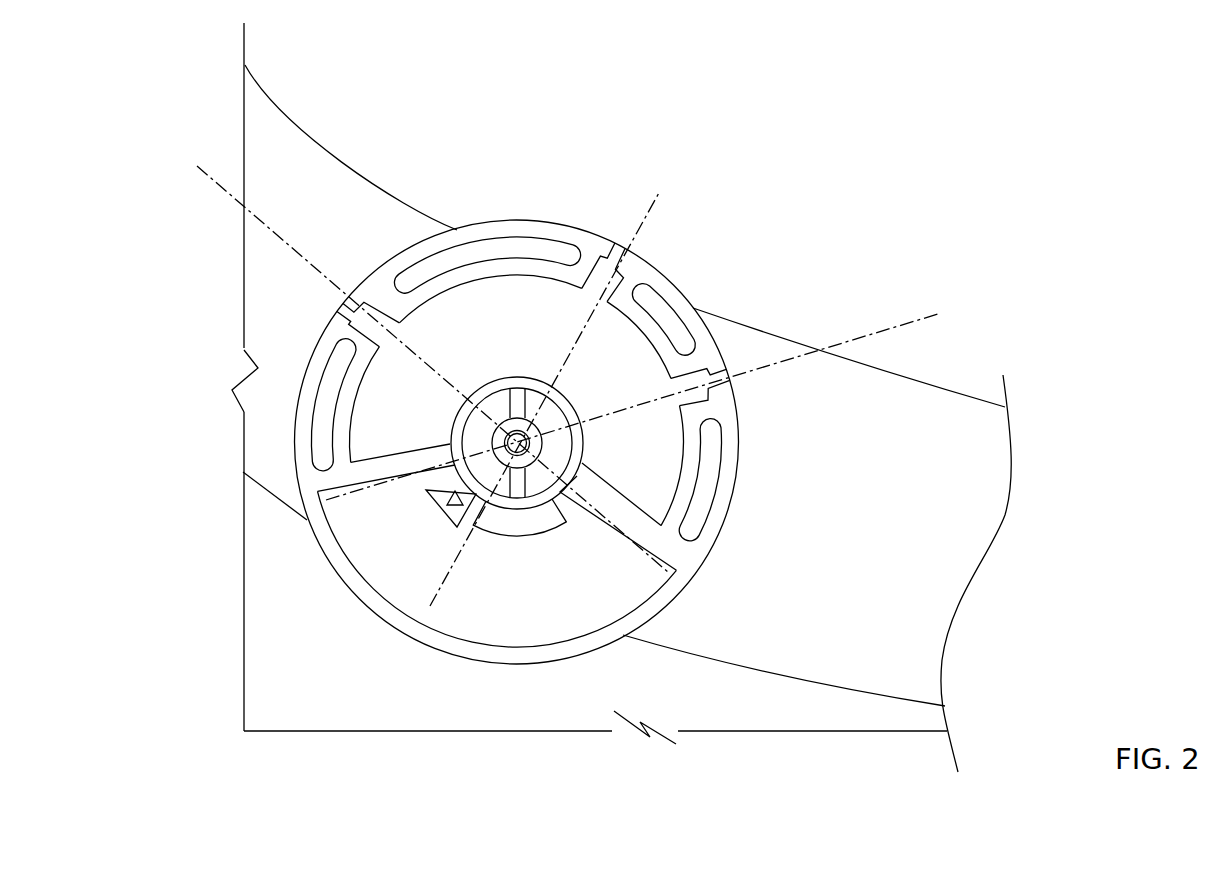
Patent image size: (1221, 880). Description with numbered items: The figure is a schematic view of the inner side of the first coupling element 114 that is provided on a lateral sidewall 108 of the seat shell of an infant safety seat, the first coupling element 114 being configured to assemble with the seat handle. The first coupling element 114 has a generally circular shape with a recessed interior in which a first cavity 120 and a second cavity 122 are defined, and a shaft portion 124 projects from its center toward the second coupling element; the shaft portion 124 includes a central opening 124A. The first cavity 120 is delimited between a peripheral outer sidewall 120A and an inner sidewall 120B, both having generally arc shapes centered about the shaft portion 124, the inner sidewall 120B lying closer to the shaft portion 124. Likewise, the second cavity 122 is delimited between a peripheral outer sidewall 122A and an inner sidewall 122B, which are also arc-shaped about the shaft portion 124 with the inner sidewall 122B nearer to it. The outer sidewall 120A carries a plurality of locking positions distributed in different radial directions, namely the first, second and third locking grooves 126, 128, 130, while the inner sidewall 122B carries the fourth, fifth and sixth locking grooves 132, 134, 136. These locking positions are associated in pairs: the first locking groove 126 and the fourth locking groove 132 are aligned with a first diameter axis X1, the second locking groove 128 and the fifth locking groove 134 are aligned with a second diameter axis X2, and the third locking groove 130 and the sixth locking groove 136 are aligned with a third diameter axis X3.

The lateral sidewall 108 is at (950, 410).
The first coupling element 114 is at (250, 428).
The first cavity 120 is at (527, 292).
The outer sidewall 120A is at (465, 275).
The inner sidewall 120B is at (447, 422).
The second cavity 122 is at (487, 633).
The outer sidewall 122A is at (564, 648).
The inner sidewall 122B is at (538, 538).
The shaft portion 124 is at (545, 446).
The central opening 124A is at (506, 416).
The first locking groove 126 is at (722, 360).
The second locking groove 128 is at (626, 256).
The third locking groove 130 is at (360, 295).
The fourth locking groove 132 is at (436, 476).
The fifth locking groove 134 is at (469, 521).
The sixth locking groove 136 is at (592, 506).
The first diameter axis X1 is at (905, 318).
The second diameter axis X2 is at (648, 200).
The third diameter axis X3 is at (243, 196).